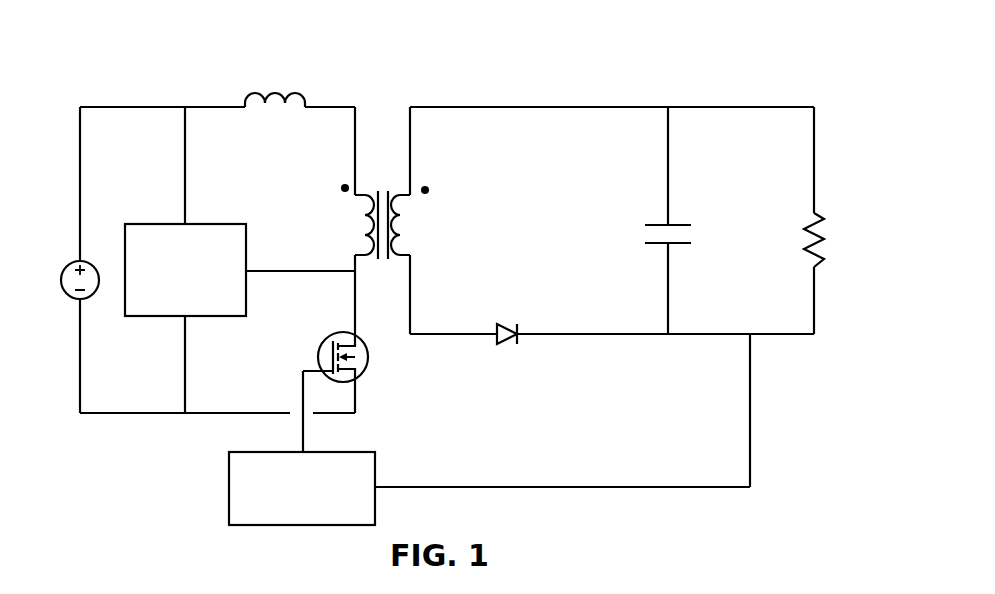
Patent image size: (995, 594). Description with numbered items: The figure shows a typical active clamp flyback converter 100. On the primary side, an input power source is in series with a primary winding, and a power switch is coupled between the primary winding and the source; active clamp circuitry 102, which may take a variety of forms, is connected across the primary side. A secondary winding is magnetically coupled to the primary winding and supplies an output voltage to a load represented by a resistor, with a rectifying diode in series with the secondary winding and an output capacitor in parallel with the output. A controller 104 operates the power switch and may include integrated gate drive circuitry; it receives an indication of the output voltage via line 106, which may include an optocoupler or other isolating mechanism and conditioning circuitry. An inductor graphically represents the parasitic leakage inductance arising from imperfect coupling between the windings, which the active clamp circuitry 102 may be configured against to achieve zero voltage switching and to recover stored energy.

The active clamp flyback converter 100 is at (449, 273).
The active clamp circuitry 102 is at (213, 224).
The controller 104 is at (226, 478).
The line 106 is at (487, 487).